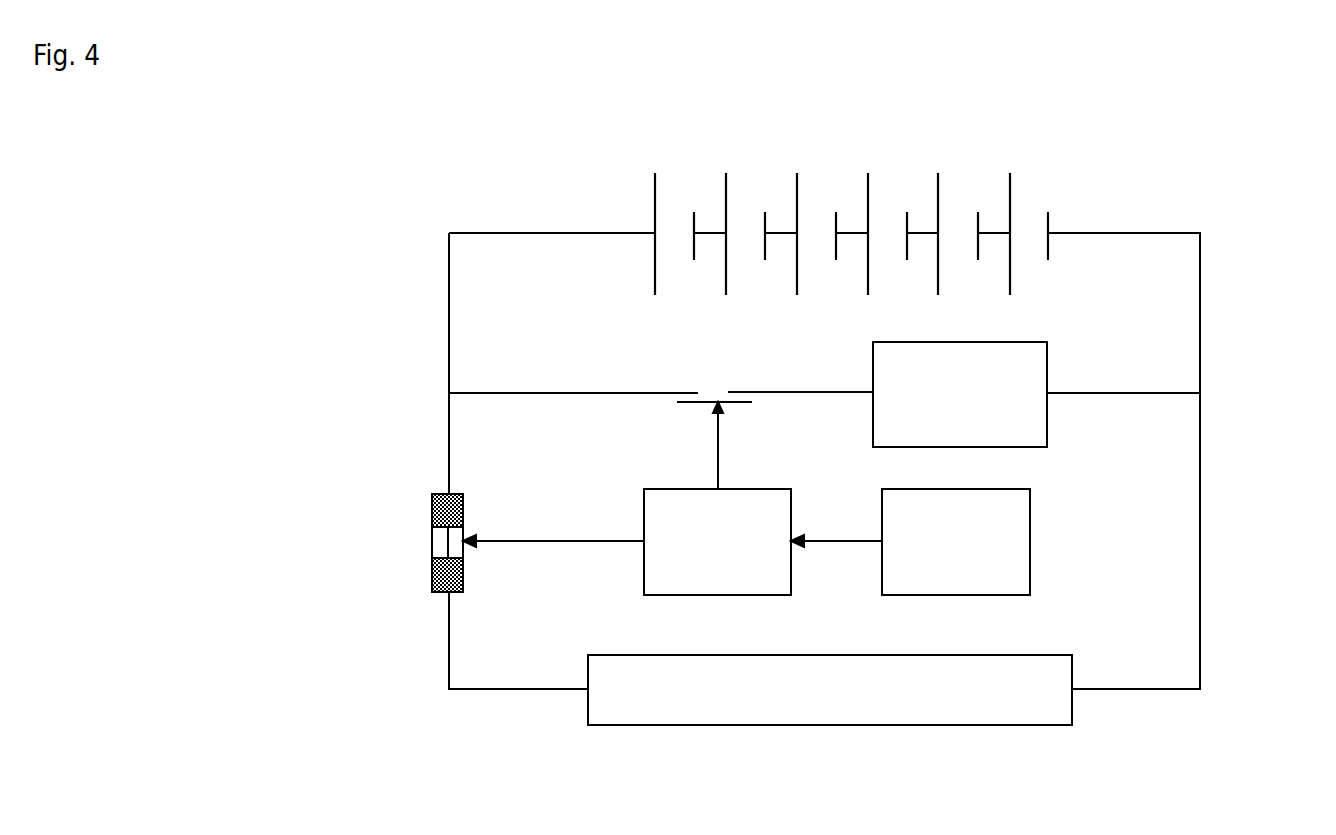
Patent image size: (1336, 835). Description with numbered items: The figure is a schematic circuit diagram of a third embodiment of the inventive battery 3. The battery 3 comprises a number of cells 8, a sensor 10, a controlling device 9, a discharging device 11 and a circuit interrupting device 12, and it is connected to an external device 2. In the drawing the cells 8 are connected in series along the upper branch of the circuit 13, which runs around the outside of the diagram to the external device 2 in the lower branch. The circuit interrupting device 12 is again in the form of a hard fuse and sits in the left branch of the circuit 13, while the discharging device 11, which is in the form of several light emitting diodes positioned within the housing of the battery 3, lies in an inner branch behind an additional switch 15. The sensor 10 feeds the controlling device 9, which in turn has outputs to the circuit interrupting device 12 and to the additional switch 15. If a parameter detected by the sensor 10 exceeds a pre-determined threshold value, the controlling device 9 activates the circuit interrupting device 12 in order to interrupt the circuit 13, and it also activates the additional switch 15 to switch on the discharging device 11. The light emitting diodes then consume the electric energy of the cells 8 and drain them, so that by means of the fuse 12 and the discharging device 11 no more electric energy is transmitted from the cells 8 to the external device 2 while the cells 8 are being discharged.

The external device 2 is at (880, 712).
The battery 3 is at (1238, 279).
The cells 8 is at (1081, 184).
The controlling device 9 is at (659, 564).
The sensor 10 is at (1013, 568).
The discharging device 11 is at (1030, 428).
The circuit interrupting device 12 is at (438, 541).
The circuit 13 is at (447, 669).
The additional switch 15 is at (690, 384).